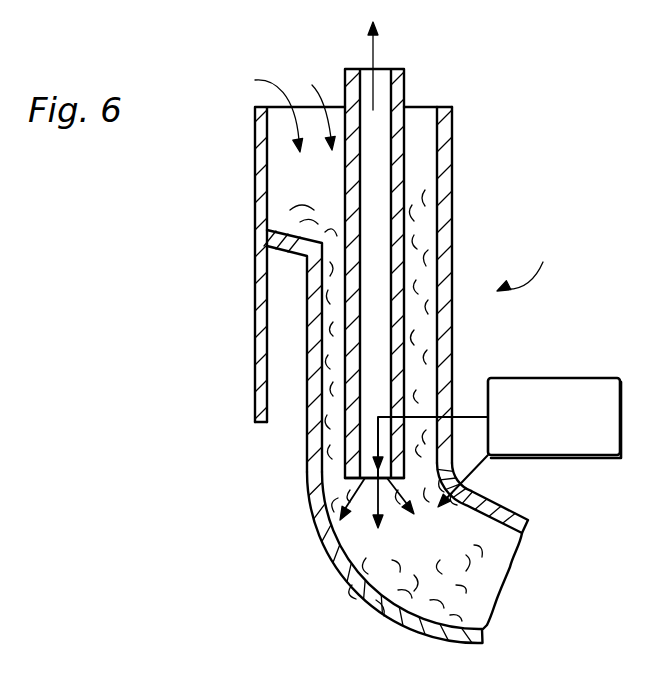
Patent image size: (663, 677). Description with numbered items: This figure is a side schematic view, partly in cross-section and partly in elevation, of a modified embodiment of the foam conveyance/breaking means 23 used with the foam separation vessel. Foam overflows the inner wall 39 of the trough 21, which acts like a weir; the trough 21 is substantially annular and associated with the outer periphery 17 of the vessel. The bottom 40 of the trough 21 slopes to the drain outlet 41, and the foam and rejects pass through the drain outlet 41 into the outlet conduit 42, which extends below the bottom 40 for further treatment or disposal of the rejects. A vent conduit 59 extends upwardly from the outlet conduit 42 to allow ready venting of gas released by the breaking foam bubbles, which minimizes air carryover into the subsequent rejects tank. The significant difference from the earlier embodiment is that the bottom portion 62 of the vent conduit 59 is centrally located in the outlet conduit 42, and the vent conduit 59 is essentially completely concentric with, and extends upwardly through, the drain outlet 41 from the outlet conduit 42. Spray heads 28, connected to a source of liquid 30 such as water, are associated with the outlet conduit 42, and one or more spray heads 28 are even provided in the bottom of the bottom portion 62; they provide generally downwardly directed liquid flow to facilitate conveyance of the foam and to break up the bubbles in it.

The outer periphery 17 is at (266, 412).
The trough 21 is at (423, 90).
The foam conveyance/breaking means 23 is at (525, 261).
The spray heads 28 is at (407, 522).
The source of liquid 30 is at (543, 378).
The inner wall 39 is at (256, 145).
The bottom 40 is at (300, 338).
The drain outlet 41 is at (295, 113).
The outlet conduit 42 is at (362, 592).
The vent conduit 59 is at (405, 187).
The bottom portion 62 is at (350, 422).